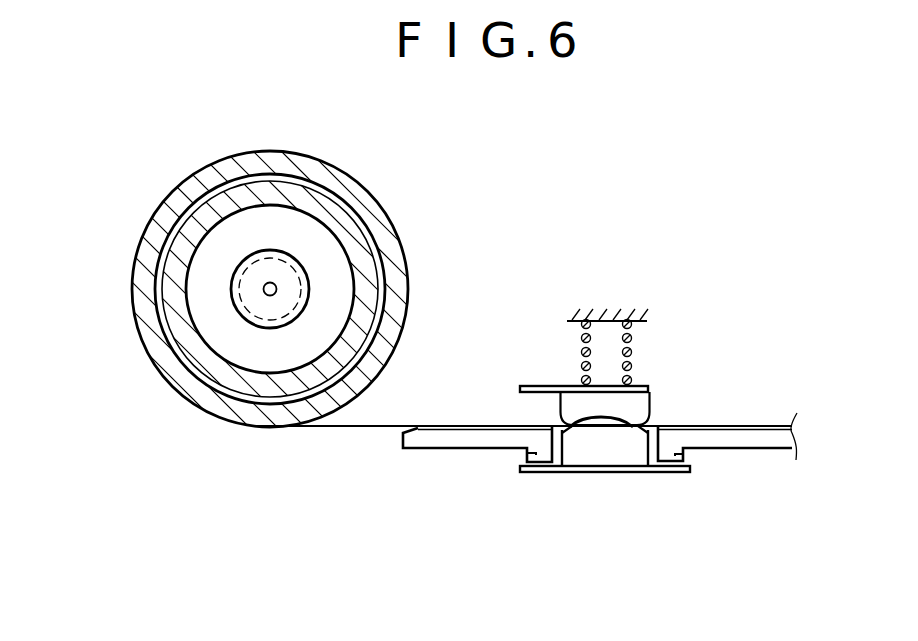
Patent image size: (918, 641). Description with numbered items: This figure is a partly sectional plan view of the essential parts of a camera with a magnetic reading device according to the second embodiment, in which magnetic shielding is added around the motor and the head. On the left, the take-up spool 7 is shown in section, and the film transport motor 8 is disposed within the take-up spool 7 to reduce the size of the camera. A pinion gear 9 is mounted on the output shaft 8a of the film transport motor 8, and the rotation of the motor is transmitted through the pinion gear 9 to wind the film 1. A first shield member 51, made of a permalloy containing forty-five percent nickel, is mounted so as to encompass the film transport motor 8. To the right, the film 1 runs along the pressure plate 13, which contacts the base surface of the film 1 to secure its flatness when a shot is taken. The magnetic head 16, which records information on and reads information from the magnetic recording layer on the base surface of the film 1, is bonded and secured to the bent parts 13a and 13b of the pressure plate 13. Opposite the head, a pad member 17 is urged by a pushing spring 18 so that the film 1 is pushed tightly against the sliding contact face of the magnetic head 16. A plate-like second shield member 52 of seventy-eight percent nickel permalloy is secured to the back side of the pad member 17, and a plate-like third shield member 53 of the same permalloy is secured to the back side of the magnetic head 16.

The film 1 is at (402, 424).
The take-up spool 7 is at (377, 215).
The film transport motor 8 is at (237, 228).
The output shaft 8a is at (270, 283).
The pinion gear 9 is at (292, 297).
The pressure plate 13 is at (417, 452).
The bent part 13a is at (676, 455).
The bent part 13b is at (536, 454).
The magnetic head 16 is at (618, 455).
The pad member 17 is at (637, 403).
The pushing spring 18 is at (632, 337).
The first shield member 51 is at (328, 207).
The second shield member 52 is at (550, 386).
The third shield member 53 is at (548, 472).